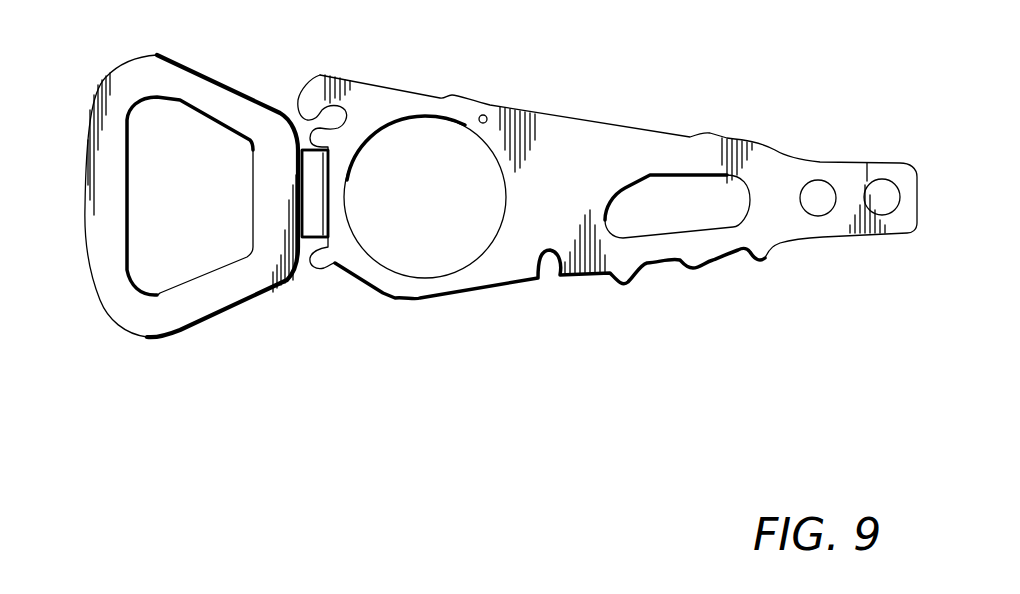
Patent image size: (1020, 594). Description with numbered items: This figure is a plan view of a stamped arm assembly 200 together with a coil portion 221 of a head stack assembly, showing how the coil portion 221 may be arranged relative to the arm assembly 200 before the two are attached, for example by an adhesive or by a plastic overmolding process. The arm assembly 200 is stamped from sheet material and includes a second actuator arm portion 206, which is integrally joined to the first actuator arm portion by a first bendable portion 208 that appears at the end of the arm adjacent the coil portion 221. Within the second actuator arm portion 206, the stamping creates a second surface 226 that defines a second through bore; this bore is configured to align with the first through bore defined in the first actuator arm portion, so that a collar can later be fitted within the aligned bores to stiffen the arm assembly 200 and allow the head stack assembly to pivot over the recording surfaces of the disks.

The arm assembly 200 is at (736, 100).
The second actuator arm portion 206 is at (595, 127).
The first bendable portion 208 is at (312, 198).
The coil portion 221 is at (173, 327).
The second surface 226 is at (447, 257).